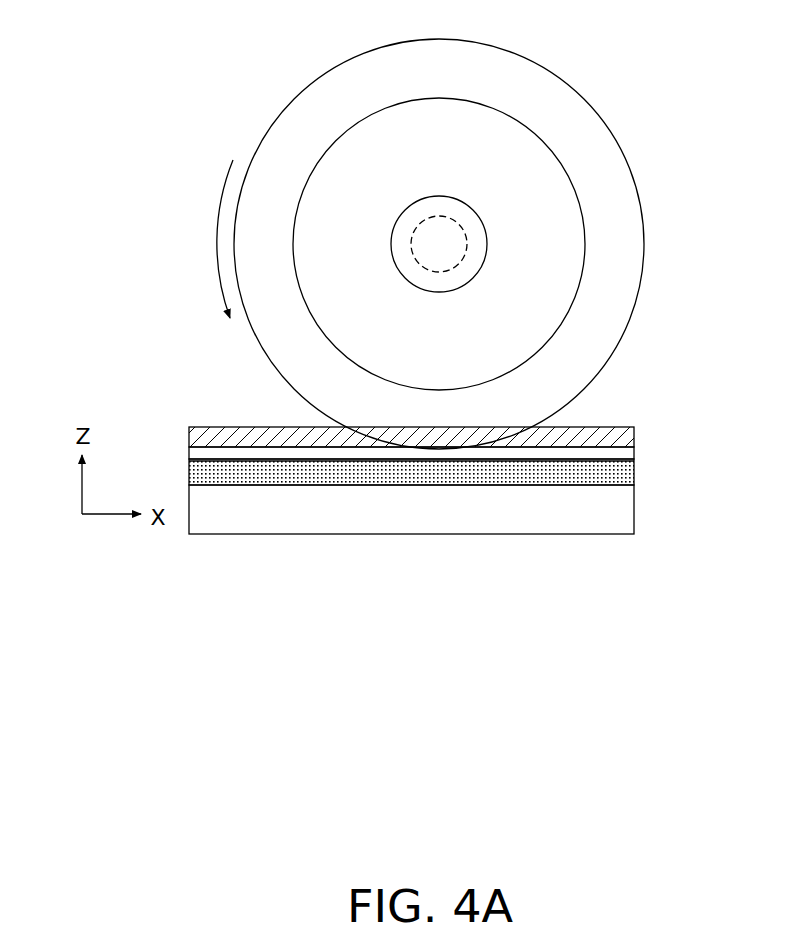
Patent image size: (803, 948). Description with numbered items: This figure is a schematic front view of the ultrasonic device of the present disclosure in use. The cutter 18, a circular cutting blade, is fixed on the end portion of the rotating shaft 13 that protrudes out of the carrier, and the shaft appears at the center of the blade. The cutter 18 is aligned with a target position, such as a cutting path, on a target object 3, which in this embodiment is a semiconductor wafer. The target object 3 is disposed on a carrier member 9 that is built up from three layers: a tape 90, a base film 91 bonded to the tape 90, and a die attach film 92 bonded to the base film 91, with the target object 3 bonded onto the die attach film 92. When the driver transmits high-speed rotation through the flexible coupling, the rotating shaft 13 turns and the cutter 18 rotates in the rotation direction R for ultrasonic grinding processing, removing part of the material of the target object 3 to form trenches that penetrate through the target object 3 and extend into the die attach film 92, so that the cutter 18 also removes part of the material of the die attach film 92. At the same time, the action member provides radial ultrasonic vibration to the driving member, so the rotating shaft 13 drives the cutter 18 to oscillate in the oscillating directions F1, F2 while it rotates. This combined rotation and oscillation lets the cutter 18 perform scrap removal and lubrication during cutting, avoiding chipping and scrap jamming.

The cutter 18 is at (320, 97).
The rotating shaft 13 is at (425, 226).
The target object 3 is at (628, 439).
The carrier member 9 is at (449, 480).
The tape 90 is at (442, 509).
The base film 91 is at (628, 477).
The die attach film 92 is at (628, 454).
The rotation direction R is at (218, 228).
The oscillating direction F1 is at (448, 244).
The oscillating direction F2 is at (430, 244).